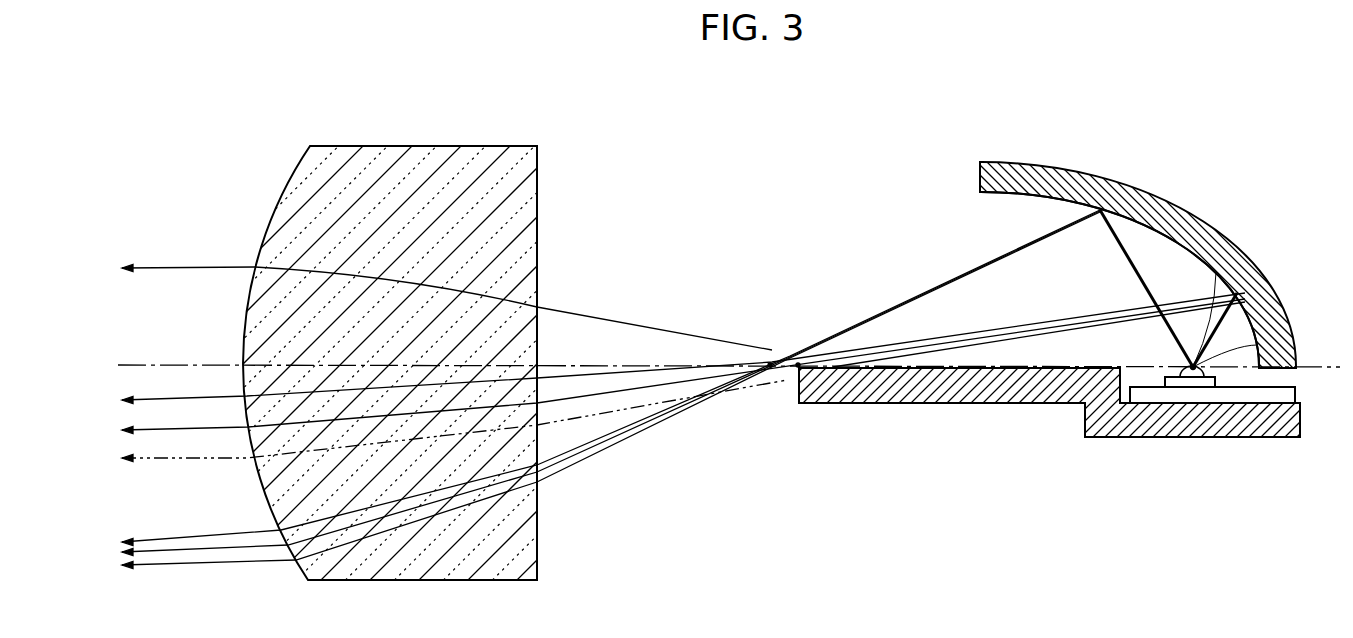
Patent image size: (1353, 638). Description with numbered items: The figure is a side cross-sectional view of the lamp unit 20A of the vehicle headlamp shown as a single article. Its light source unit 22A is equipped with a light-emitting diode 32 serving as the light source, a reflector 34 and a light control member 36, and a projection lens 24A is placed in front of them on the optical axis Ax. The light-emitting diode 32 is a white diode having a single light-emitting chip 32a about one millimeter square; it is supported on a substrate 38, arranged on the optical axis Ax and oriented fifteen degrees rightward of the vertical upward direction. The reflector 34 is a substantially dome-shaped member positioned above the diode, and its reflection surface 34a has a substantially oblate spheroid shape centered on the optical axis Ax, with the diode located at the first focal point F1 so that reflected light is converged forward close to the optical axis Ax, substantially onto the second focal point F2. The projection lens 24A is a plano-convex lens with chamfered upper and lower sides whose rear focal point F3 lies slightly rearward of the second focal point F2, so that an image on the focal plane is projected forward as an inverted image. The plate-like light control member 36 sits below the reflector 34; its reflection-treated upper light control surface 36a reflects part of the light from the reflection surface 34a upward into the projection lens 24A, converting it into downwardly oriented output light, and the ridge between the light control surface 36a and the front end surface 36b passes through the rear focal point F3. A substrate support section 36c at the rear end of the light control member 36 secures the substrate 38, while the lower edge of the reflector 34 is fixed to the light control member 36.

The lamp unit 20A is at (1024, 94).
The light source unit 22A is at (825, 171).
The projection lens 24A is at (303, 153).
The light-emitting diode 32 is at (1168, 362).
The light-emitting chip 32a is at (1238, 296).
The reflector 34 is at (1148, 180).
The reflection surface 34a is at (1160, 233).
The light control member 36 is at (920, 412).
The light control surface 36a is at (829, 366).
The front end surface 36b is at (800, 376).
The substrate support section 36c is at (1177, 426).
The substrate 38 is at (1233, 404).
The first focal point F1 is at (1197, 364).
The second focal point F2 is at (770, 364).
The rear focal point F3 is at (798, 364).
The optical axis Ax is at (187, 365).